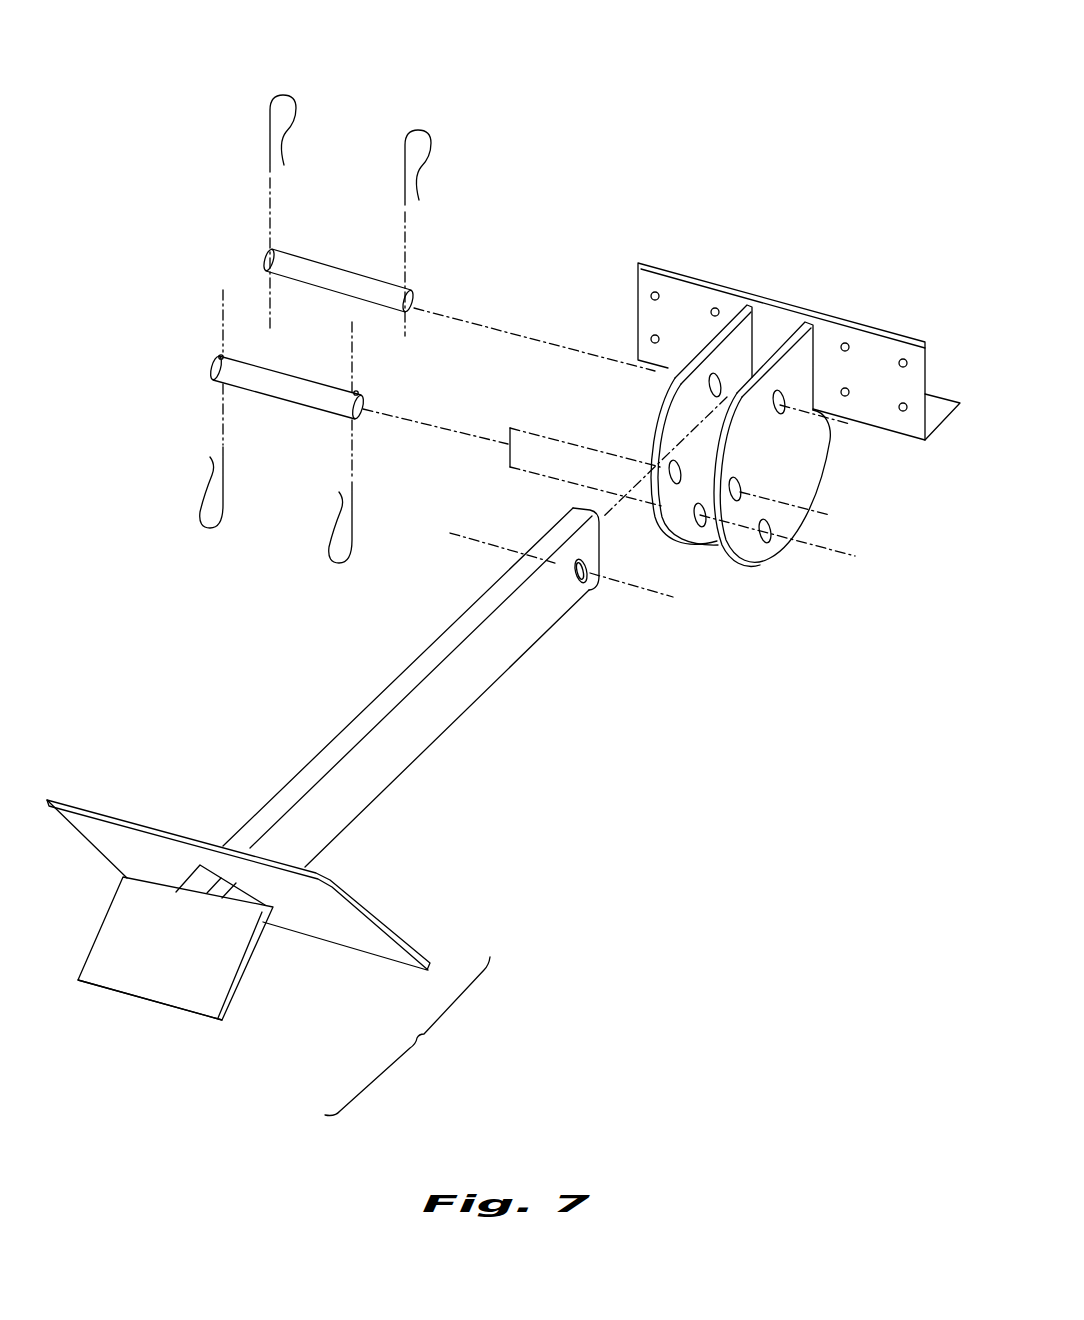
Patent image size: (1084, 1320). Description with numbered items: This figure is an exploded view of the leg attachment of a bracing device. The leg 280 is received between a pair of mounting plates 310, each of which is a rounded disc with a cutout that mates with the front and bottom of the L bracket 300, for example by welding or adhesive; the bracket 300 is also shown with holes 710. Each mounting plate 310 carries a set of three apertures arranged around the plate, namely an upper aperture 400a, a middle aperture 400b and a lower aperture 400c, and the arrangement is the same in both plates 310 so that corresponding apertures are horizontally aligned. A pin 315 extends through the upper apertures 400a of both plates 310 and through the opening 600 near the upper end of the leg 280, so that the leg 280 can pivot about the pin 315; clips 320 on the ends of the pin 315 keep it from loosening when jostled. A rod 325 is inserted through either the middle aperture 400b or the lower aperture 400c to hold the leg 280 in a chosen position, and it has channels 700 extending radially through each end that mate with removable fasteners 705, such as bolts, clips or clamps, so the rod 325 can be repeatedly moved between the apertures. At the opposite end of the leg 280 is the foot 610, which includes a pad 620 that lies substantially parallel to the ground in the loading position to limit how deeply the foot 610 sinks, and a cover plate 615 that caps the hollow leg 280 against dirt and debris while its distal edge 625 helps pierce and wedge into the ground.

The leg 280 is at (475, 736).
The L bracket 300 is at (868, 372).
The mounting plate 310 is at (690, 405).
The pin 315 is at (328, 277).
The clip 320 is at (297, 100).
The rod 325 is at (297, 387).
The upper aperture 400a is at (781, 412).
The middle aperture 400b is at (733, 497).
The lower aperture 400c is at (763, 541).
The opening 600 is at (584, 582).
The foot 610 is at (407, 1036).
The cover plate 615 is at (181, 960).
The pad 620 is at (142, 822).
The distal edge 625 is at (147, 1000).
The channel 700 is at (221, 354).
The fastener 705 is at (208, 530).
The hole 710 is at (905, 358).